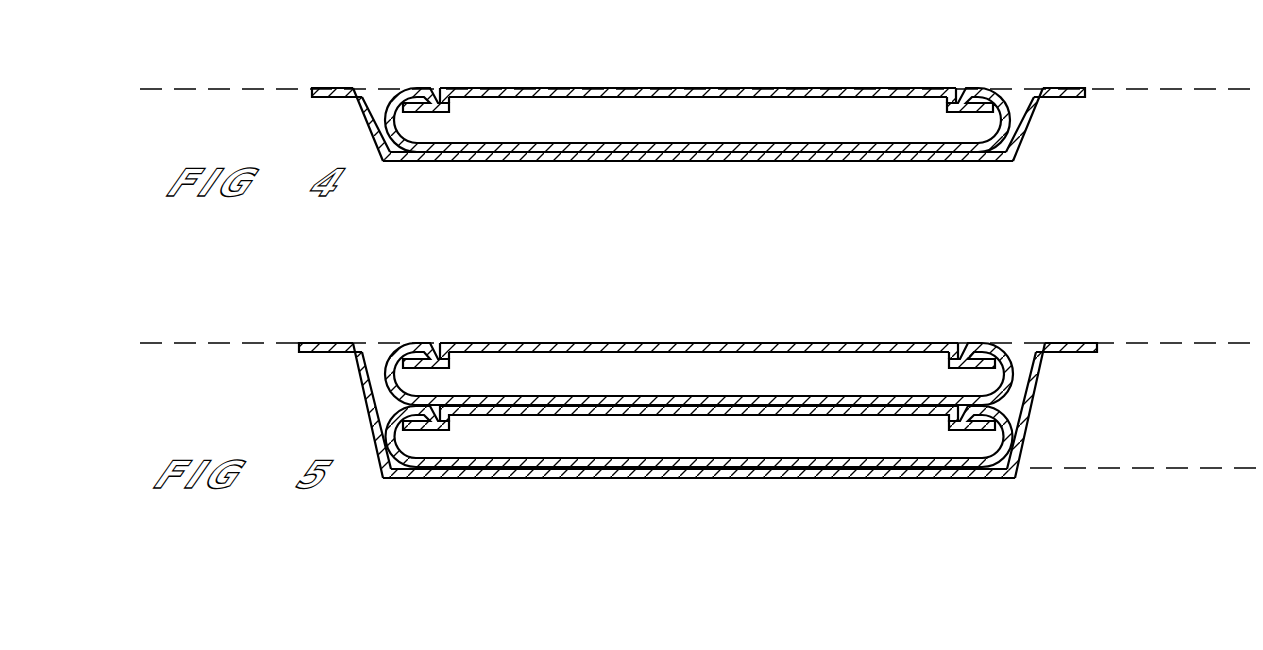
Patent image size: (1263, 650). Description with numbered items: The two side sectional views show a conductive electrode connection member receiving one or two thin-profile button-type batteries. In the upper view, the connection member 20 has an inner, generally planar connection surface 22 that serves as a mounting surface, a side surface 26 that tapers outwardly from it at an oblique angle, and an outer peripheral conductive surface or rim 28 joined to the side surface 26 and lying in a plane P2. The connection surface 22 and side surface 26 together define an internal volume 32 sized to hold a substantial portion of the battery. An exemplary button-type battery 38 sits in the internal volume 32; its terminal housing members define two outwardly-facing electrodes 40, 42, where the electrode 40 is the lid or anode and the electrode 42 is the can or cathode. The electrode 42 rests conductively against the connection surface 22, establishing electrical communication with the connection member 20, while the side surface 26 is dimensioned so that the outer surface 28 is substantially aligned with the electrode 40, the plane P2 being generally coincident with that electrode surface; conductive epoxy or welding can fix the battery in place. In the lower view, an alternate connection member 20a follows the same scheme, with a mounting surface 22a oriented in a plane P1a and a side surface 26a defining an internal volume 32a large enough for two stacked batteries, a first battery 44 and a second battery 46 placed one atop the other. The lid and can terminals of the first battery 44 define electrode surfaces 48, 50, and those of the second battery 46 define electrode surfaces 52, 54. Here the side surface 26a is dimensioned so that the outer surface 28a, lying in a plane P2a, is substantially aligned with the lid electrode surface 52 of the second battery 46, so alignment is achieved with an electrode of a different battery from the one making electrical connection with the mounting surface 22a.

In FIG. 4, the connection member 20 is at (338, 41).
In FIG. 4, the connection surface 22 is at (598, 142).
In FIG. 4, the side surface 26 is at (1022, 100).
In FIG. 4, the outer surface 28 is at (1070, 87).
In FIG. 4, the internal volume 32 is at (712, 64).
In FIG. 4, the button-type battery 38 is at (912, 77).
In FIG. 4, the electrode 40 is at (658, 87).
In FIG. 4, the electrode 42 is at (838, 162).
In FIG. 4, the plane P2 is at (190, 85).
In FIG. 5, the connection member 20a is at (300, 298).
In FIG. 5, the mounting surface 22a is at (582, 458).
In FIG. 5, the side surface 26a is at (362, 367).
In FIG. 5, the outer surface 28a is at (1068, 342).
In FIG. 5, the internal volume 32a is at (745, 313).
In FIG. 5, the first battery 44 is at (699, 374).
In FIG. 5, the second battery 46 is at (565, 332).
In FIG. 5, the battery electrode surface 48 is at (560, 396).
In FIG. 5, the battery electrode surface 50 is at (855, 479).
In FIG. 5, the battery electrode surface 52 is at (840, 341).
In FIG. 5, the battery electrode surface 54 is at (718, 416).
In FIG. 5, the plane P2a is at (170, 346).
In FIG. 5, the plane P1a is at (1145, 465).